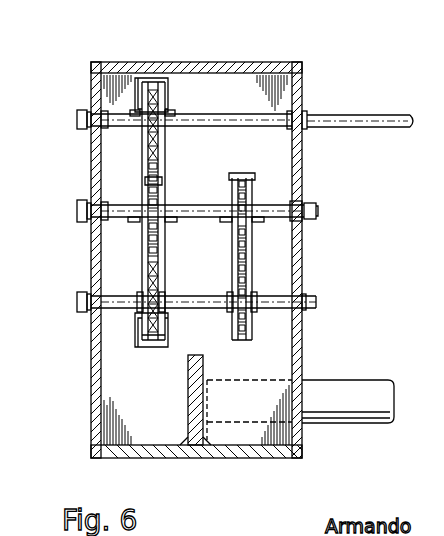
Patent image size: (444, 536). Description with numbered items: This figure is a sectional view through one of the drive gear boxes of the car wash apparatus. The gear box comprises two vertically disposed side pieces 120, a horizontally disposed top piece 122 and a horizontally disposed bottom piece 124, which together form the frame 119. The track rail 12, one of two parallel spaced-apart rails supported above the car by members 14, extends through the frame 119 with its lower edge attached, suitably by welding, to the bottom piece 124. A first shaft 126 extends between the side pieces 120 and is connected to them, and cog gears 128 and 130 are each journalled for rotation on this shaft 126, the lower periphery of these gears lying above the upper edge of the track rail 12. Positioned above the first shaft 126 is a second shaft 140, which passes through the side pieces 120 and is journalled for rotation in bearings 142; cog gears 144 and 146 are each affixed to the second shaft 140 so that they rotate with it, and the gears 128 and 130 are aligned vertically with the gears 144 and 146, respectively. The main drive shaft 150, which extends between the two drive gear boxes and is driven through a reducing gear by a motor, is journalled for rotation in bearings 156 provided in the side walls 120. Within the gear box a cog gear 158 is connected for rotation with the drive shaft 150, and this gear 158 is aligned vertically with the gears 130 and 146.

The track rail 12 is at (203, 358).
The member 14 is at (348, 378).
The frame 119 is at (300, 282).
The side piece 120 is at (92, 150).
The top piece 122 is at (262, 64).
The bottom piece 124 is at (98, 455).
The first shaft 126 is at (314, 306).
The cog gear 128 is at (245, 246).
The cog gear 130 is at (172, 212).
The second shaft 140 is at (318, 209).
The bearing 142 is at (316, 219).
The cog gear 144 is at (241, 176).
The cog gear 146 is at (152, 181).
The main drive shaft 150 is at (380, 112).
The bearing 156 is at (306, 112).
The cog gear 158 is at (160, 103).